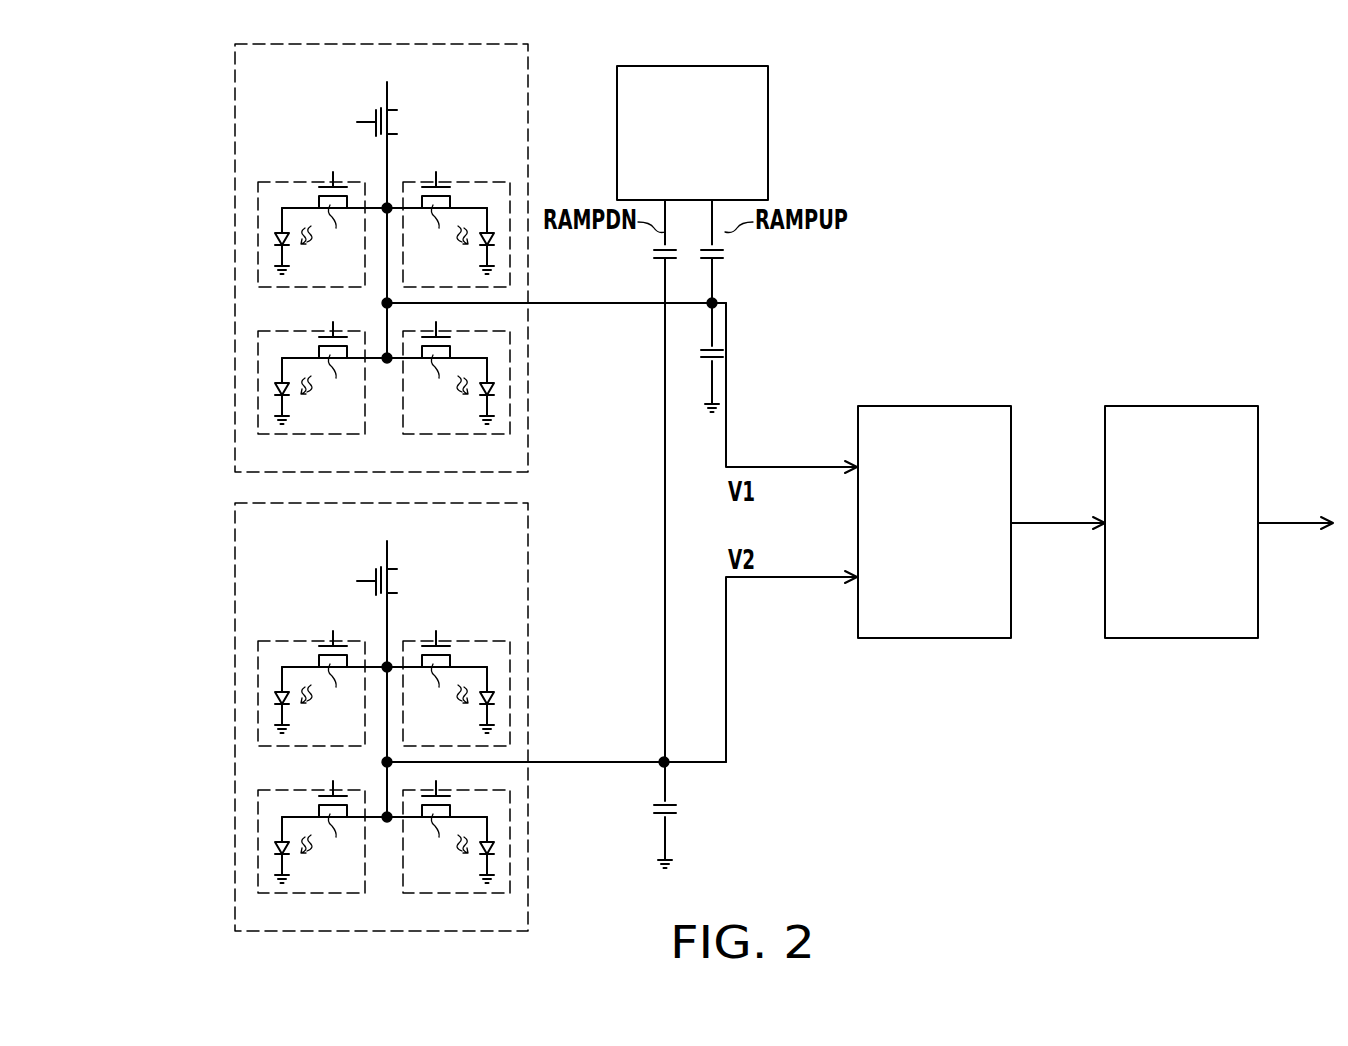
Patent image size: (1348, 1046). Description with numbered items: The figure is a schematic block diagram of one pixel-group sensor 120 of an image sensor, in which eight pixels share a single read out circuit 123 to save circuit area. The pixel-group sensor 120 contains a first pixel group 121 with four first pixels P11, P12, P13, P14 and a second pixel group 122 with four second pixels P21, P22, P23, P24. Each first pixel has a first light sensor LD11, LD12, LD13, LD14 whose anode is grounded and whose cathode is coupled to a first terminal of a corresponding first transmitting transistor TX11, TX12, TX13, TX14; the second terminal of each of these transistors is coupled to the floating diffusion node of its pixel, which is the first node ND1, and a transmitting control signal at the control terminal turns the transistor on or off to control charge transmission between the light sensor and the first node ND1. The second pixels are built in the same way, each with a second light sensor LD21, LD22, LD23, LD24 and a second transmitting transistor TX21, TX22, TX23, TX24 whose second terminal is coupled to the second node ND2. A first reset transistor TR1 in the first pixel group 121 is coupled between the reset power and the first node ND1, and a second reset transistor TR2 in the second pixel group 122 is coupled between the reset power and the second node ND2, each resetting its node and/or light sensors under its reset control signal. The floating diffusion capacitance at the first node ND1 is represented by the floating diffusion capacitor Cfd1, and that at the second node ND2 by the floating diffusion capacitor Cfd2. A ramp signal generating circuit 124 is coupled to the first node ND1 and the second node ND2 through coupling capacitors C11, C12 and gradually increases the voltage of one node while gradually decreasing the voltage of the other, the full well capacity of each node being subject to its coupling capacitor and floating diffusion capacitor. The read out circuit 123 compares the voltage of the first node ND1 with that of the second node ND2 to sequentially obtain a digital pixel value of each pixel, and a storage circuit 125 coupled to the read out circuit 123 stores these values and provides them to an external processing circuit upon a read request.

The pixel-group sensor 120 is at (1245, 825).
The first pixel group 121 is at (232, 310).
The second pixel group 122 is at (232, 769).
The read out circuit 123 is at (922, 406).
The ramp signal generating circuit 124 is at (768, 128).
The storage circuit 125 is at (1152, 406).
The first pixel P11 is at (256, 192).
The first pixel P12 is at (253, 341).
The first pixel P13 is at (528, 192).
The first pixel P14 is at (528, 355).
The second pixel P21 is at (256, 651).
The second pixel P22 is at (253, 794).
The second pixel P23 is at (528, 651).
The second pixel P24 is at (528, 814).
The first light sensor LD11 is at (274, 240).
The first light sensor LD12 is at (270, 392).
The first light sensor LD13 is at (497, 240).
The first light sensor LD14 is at (497, 390).
The second light sensor LD21 is at (274, 699).
The second light sensor LD22 is at (270, 851).
The second light sensor LD23 is at (497, 699).
The second light sensor LD24 is at (497, 849).
The first transmitting transistor TX11 is at (336, 202).
The first transmitting transistor TX12 is at (336, 352).
The first transmitting transistor TX13 is at (432, 202).
The first transmitting transistor TX14 is at (436, 356).
The second transmitting transistor TX21 is at (336, 661).
The second transmitting transistor TX22 is at (336, 811).
The second transmitting transistor TX23 is at (432, 661).
The second transmitting transistor TX24 is at (436, 815).
The first reset transistor TR1 is at (366, 122).
The second reset transistor TR2 is at (366, 581).
The coupling capacitor C11 is at (735, 255).
The coupling capacitor C12 is at (642, 255).
The floating diffusion capacitor Cfd1 is at (724, 355).
The floating diffusion capacitor Cfd2 is at (677, 811).
The first node ND1 is at (712, 303).
The second node ND2 is at (666, 760).